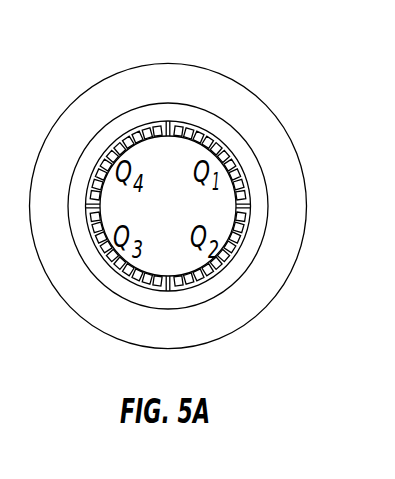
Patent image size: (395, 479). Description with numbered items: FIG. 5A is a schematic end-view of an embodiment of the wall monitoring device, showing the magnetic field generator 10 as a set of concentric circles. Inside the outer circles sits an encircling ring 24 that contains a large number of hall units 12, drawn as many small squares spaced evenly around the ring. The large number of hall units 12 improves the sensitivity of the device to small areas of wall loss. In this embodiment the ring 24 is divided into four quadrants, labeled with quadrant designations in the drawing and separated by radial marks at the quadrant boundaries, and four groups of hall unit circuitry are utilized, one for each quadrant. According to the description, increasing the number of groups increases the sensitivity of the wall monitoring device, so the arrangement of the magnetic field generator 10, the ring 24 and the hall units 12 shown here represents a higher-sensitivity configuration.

The magnetic field generator 10 is at (179, 60).
The hall units 12 is at (212, 143).
The encircling ring 24 is at (248, 182).